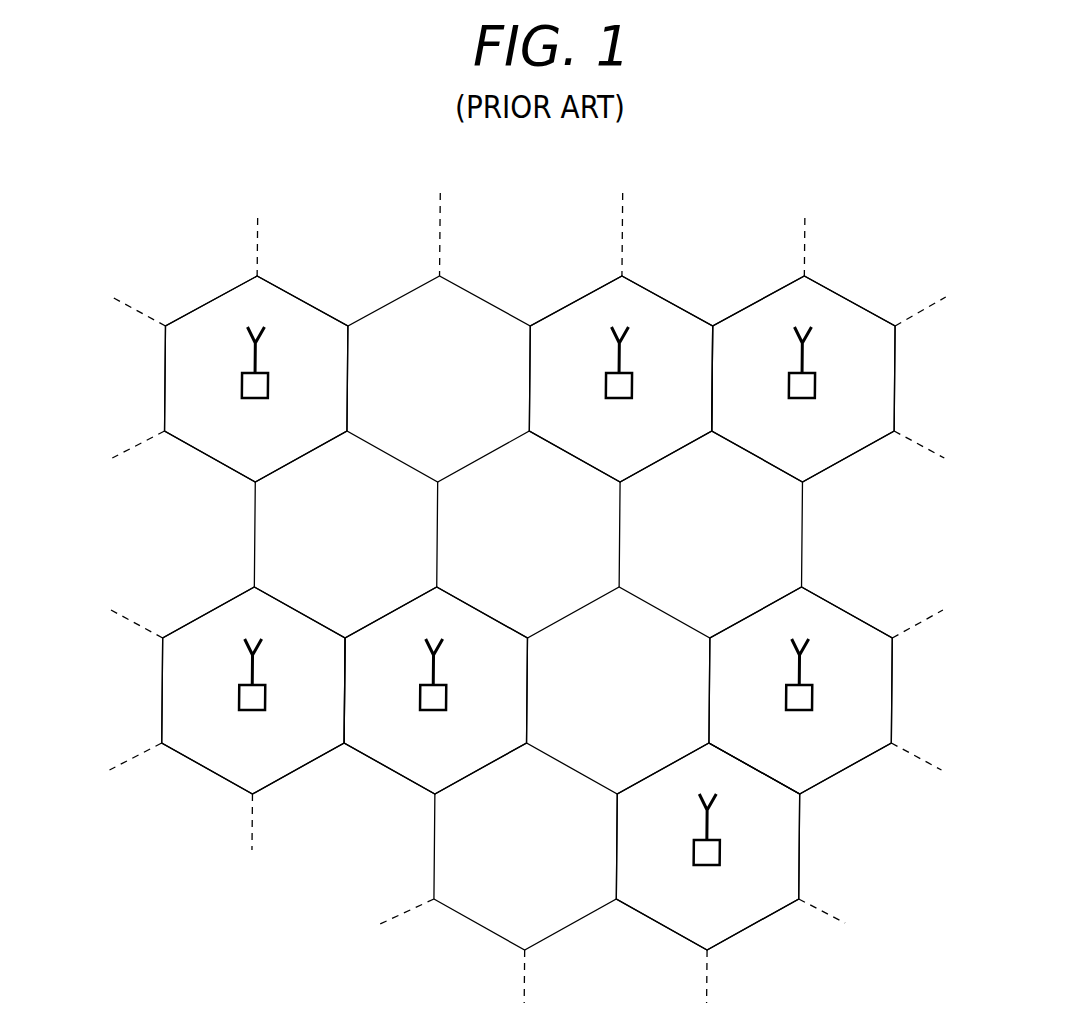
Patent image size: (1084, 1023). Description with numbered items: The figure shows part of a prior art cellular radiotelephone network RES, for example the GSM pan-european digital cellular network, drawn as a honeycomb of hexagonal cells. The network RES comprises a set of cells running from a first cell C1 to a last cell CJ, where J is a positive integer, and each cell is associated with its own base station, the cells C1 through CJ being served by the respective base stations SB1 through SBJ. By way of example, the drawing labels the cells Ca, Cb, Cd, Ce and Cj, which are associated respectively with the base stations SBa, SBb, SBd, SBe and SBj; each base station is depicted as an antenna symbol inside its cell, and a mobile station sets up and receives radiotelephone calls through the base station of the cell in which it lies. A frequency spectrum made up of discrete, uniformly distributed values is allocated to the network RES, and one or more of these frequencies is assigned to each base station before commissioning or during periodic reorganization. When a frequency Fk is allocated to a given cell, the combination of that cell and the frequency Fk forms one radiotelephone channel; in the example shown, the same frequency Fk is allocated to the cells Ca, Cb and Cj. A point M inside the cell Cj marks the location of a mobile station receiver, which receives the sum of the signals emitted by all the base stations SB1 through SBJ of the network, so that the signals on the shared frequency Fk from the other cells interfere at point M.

The cellular radiotelephone network RES is at (160, 240).
The cell Cb is at (256, 379).
The cell Ca is at (621, 379).
The cell CJ is at (803, 379).
The cell C1 is at (253, 690).
The cell Cj is at (436, 690).
The cell Cd is at (800, 690).
The cell Ce is at (707, 846).
The base station SBb is at (269, 387).
The base station SBa is at (633, 387).
The base station SBJ is at (816, 387).
The base station SB1 is at (269, 699).
The base station SBj is at (450, 699).
The base station SBd is at (816, 699).
The base station SBe is at (725, 854).
The frequency Fk is at (433, 603).
The point M is at (399, 629).